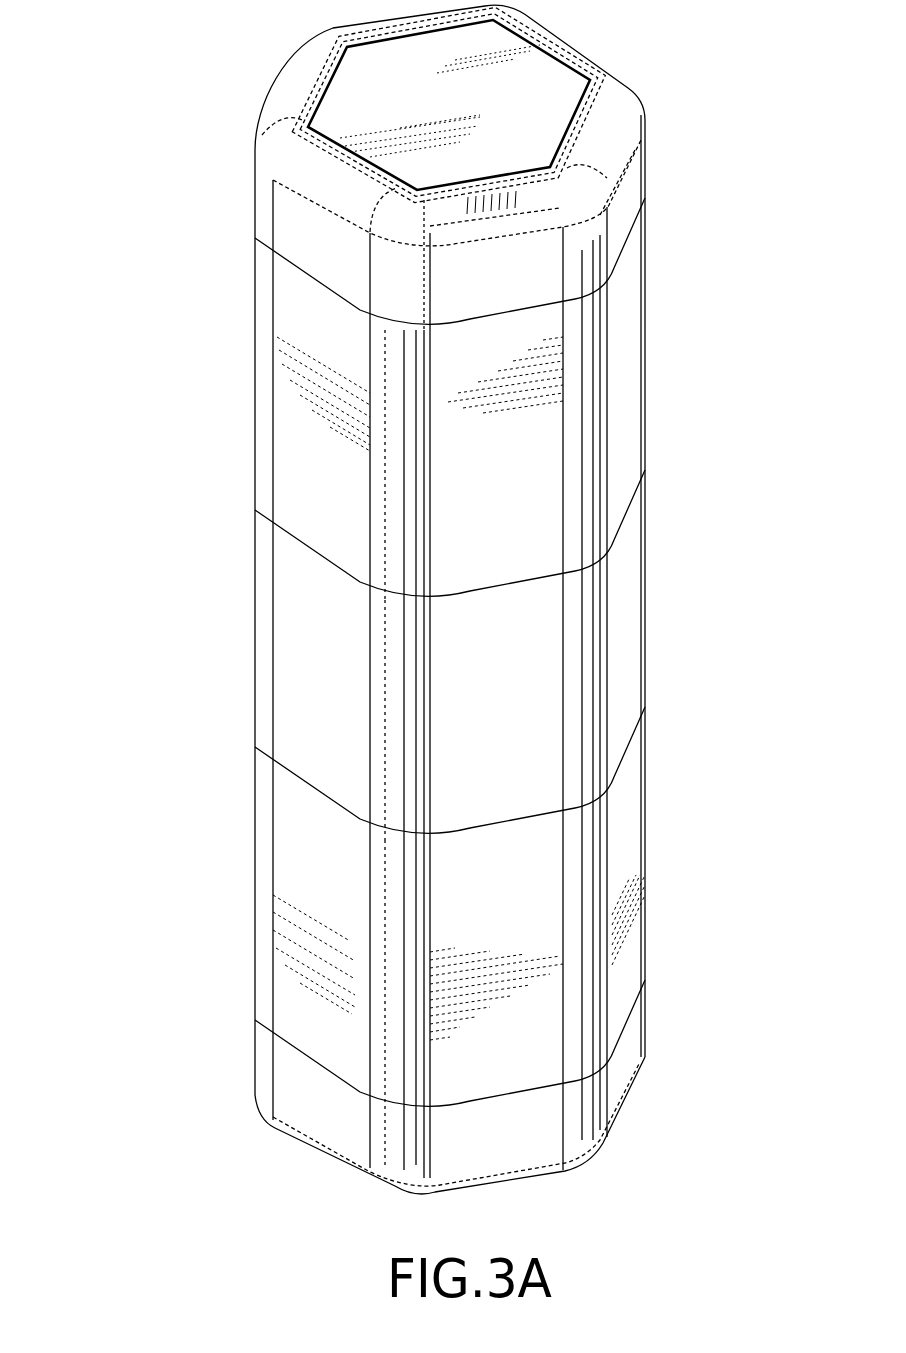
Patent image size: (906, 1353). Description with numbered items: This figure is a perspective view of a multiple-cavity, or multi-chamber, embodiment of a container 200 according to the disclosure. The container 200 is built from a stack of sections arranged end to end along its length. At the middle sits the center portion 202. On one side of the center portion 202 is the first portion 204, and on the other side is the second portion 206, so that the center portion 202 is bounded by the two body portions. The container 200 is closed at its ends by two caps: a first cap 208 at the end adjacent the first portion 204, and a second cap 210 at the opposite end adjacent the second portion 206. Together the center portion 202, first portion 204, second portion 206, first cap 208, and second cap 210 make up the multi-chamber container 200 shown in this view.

The container 200 is at (72, 566).
The center portion 202 is at (665, 620).
The first portion 204 is at (665, 370).
The second portion 206 is at (665, 920).
The first cap 208 is at (663, 137).
The second cap 210 is at (663, 1108).